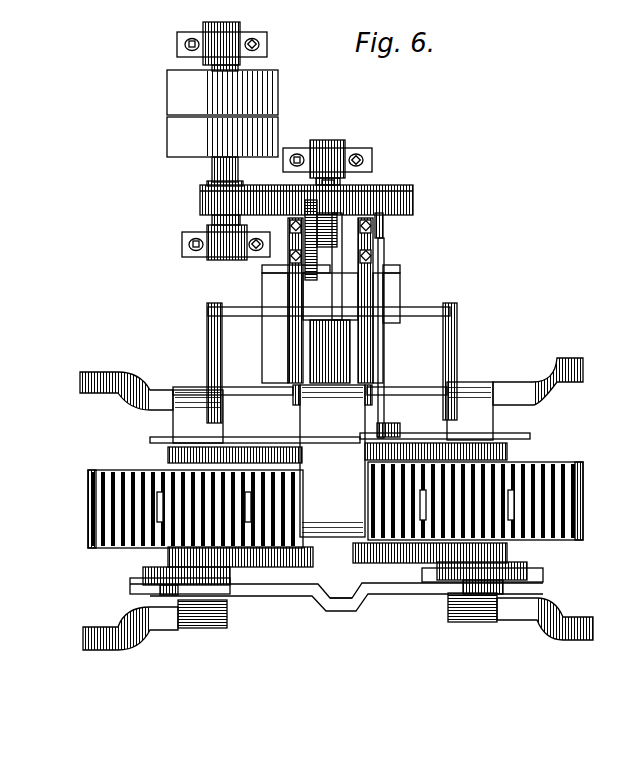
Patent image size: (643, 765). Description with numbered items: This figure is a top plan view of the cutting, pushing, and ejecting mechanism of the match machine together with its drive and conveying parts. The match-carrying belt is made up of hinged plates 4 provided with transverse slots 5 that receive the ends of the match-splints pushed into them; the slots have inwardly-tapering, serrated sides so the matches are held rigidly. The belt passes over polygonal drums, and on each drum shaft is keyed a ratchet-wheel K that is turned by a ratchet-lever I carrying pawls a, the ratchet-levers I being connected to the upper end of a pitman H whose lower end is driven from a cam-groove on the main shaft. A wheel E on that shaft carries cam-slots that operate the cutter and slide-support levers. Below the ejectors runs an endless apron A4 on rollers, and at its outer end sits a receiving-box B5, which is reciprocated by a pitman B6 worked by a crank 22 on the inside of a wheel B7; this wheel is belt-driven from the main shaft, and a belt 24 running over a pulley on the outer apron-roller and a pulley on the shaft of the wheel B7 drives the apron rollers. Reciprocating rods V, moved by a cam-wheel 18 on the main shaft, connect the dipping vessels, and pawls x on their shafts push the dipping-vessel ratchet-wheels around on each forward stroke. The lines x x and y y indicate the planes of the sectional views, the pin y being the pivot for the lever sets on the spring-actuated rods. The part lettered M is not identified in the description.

The crank 22 is at (343, 223).
The bracket M is at (383, 240).
The belt 24 is at (384, 262).
The wheel E is at (397, 293).
The wheel B7 is at (290, 266).
The pitman B6 is at (318, 300).
The receiving-box B5 is at (322, 334).
The reciprocating rods V is at (340, 426).
The cam-wheel 18 is at (400, 432).
The endless apron A4 is at (332, 461).
The hinged plates 4 is at (103, 549).
The pawls x is at (83, 510).
The transverse slots 5 is at (98, 537).
The ratchet-wheel K is at (166, 560).
The pawls a is at (130, 587).
The ratchet-levers I is at (336, 601).
The pitman H is at (338, 600).
The pin y is at (343, 113).